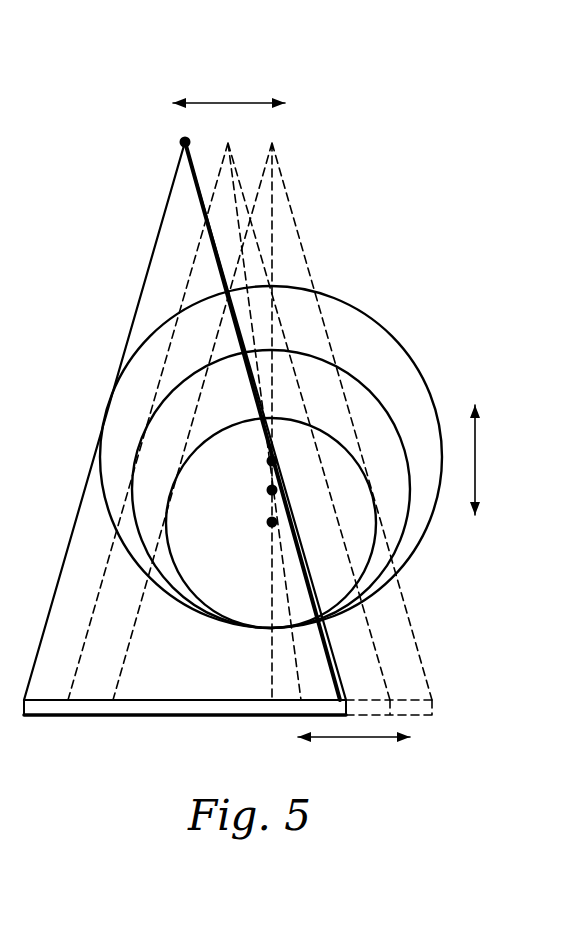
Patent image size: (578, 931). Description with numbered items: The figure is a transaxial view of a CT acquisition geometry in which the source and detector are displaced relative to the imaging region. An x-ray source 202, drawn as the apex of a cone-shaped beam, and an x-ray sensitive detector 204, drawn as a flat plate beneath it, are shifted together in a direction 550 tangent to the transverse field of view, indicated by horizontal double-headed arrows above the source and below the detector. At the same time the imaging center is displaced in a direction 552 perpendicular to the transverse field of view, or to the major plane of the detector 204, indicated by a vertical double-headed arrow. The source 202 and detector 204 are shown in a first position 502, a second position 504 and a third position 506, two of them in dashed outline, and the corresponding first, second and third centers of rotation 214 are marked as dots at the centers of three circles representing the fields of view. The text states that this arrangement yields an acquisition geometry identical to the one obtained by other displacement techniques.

The x-ray source 202 is at (183, 141).
The x-ray sensitive detector 204 is at (136, 706).
The center of rotation 214 is at (238, 578).
The first position 502 is at (290, 210).
The second position 504 is at (195, 258).
The third position 506 is at (134, 311).
The direction tangent to the transverse FOV 550 is at (228, 103).
The direction perpendicular to the transverse FOV 552 is at (475, 461).